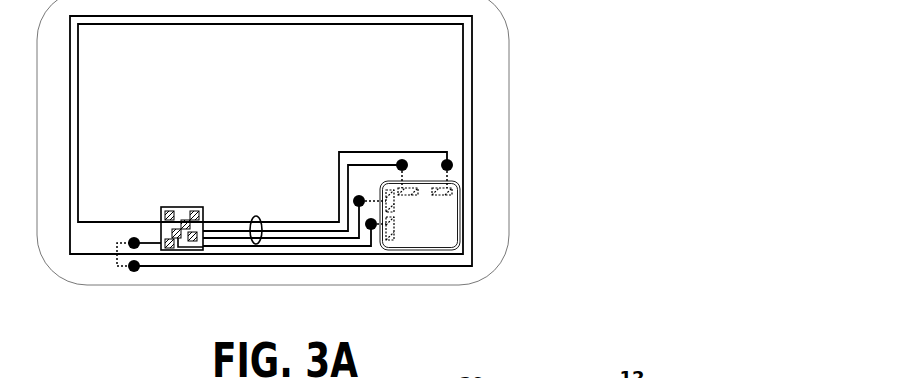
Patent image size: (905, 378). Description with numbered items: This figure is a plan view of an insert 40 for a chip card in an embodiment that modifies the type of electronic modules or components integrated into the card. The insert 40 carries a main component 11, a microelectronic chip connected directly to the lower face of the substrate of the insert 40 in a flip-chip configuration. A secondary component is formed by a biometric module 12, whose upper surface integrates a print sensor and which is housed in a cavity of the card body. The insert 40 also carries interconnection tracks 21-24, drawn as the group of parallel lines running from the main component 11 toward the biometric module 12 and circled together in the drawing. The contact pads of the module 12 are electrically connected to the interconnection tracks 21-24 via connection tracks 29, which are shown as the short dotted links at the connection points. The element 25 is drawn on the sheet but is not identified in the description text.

The insert 40 is at (493, 28).
The antenna coil 25 is at (472, 110).
The connection tracks 29 is at (117, 266).
The main component 11 is at (179, 250).
The interconnection tracks 21-24 is at (254, 247).
The biometric module 12 is at (457, 236).